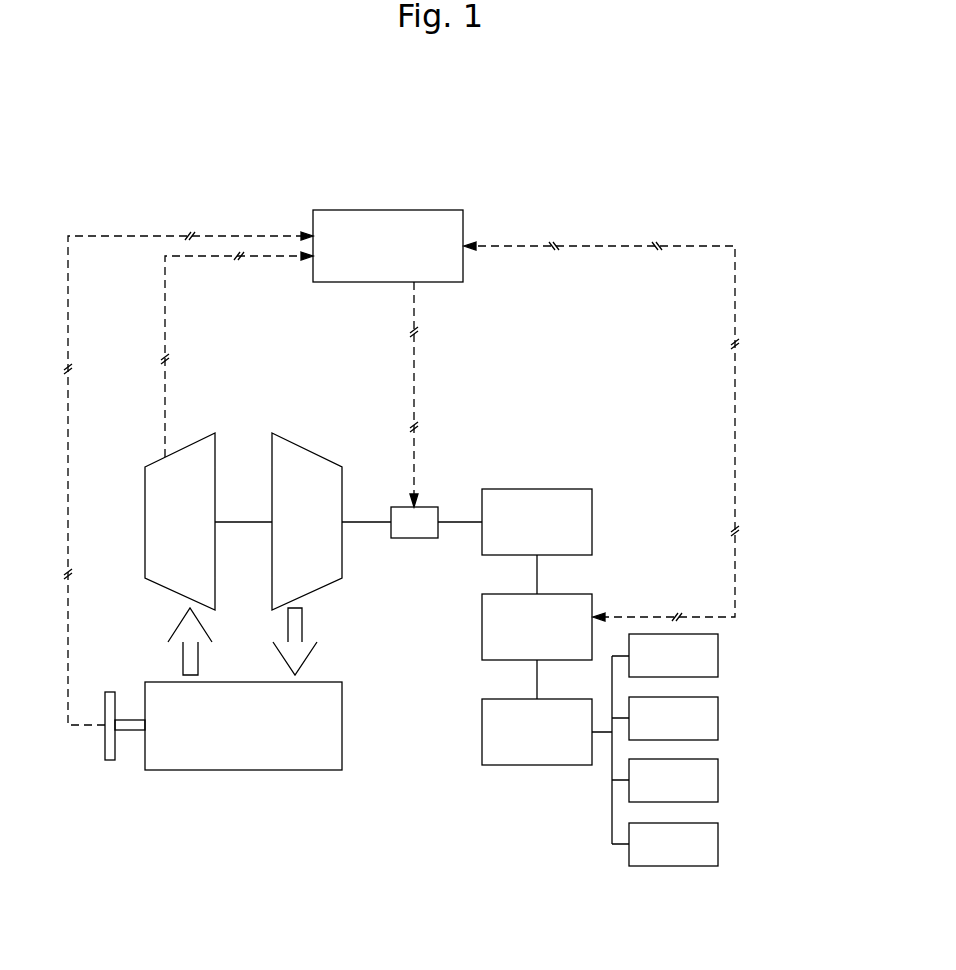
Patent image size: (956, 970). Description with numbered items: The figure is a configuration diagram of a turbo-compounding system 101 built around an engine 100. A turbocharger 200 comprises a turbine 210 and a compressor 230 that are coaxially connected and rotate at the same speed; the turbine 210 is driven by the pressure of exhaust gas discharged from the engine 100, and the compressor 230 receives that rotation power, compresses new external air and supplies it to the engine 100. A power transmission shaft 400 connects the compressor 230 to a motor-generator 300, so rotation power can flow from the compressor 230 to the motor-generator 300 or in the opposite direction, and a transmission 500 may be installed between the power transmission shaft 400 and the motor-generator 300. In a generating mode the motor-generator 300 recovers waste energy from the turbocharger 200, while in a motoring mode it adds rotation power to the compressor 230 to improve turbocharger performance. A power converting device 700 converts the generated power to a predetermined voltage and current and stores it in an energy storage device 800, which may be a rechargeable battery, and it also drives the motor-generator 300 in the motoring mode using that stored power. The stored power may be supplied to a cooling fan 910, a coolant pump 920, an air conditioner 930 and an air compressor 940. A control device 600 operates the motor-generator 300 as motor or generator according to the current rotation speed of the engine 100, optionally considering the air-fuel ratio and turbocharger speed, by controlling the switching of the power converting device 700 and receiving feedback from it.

The turbo-compounding system 101 is at (550, 165).
The engine 100 is at (258, 785).
The turbocharger 200 is at (243, 467).
The turbine 210 is at (180, 447).
The compressor 230 is at (302, 488).
The motor-generator 300 is at (606, 518).
The power transmission shaft 400 is at (369, 540).
The transmission 500 is at (445, 488).
The control device 600 is at (480, 291).
The power converting device 700 is at (470, 637).
The energy storage device 800 is at (470, 733).
The cooling fan 910 is at (730, 656).
The coolant pump 920 is at (730, 718).
The air conditioner 930 is at (730, 780).
The air compressor 940 is at (730, 844).